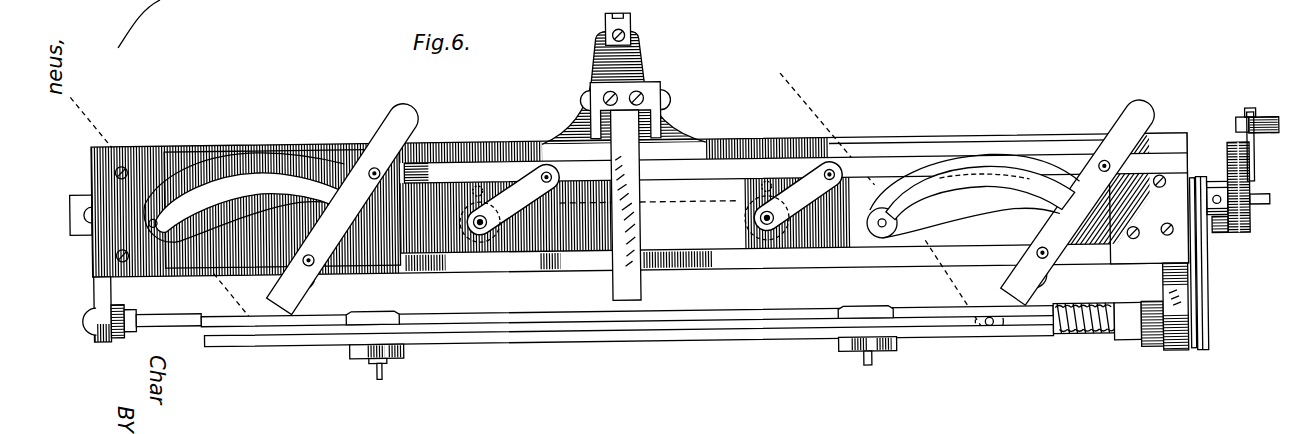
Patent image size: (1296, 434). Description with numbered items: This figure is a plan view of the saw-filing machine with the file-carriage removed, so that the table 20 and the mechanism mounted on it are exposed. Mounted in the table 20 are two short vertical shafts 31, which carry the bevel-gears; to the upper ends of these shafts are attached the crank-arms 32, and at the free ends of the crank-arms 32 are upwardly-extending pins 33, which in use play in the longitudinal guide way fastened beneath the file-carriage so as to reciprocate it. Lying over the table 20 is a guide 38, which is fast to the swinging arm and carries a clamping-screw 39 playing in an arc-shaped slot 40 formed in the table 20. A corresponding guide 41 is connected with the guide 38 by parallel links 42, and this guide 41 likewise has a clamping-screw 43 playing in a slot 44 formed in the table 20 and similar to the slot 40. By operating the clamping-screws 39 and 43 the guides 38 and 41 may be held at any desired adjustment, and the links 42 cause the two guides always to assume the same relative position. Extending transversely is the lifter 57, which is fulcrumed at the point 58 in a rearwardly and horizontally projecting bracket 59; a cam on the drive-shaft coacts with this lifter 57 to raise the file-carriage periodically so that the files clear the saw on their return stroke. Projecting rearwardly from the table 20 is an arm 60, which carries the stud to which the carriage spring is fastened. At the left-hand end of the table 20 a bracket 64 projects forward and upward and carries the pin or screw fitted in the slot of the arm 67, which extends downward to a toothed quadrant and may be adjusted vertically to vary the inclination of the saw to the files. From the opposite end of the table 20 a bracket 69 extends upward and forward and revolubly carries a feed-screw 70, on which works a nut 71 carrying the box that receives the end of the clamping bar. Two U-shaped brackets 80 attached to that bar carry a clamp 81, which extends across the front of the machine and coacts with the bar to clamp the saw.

The table 20 is at (868, 224).
The short vertical shafts 31 is at (483, 227).
The crank-arms 32 is at (654, 198).
The pins 33 is at (545, 171).
The guide 38 is at (1123, 123).
The clamping-screw 39 is at (1040, 212).
The arc-shaped slot 40 is at (935, 192).
The guide 41 is at (383, 126).
The parallel links 42 is at (703, 171).
The clamping-screw 43 is at (378, 273).
The slot 44 is at (255, 181).
The lifter 57 is at (638, 238).
The fulcrum point 58 is at (662, 92).
The bracket 59 is at (672, 106).
The arm 60 is at (636, 62).
The bracket 64 is at (100, 286).
The arm 67 is at (632, 33).
The bracket 69 is at (1172, 299).
The feed-screw 70 is at (1093, 343).
The nut 71 is at (1130, 330).
The U-shaped brackets 80 is at (355, 342).
The clamp 81 is at (550, 337).